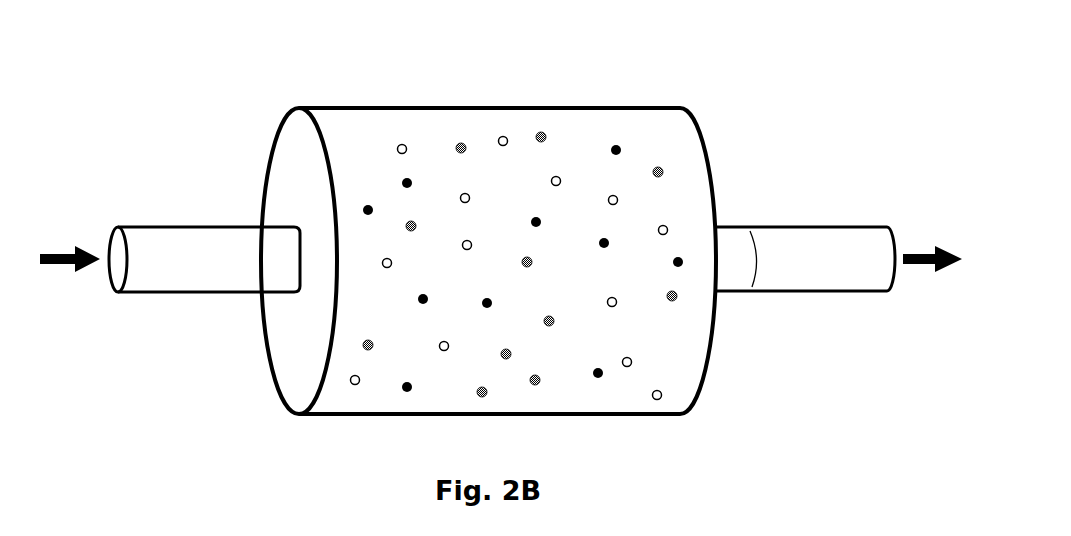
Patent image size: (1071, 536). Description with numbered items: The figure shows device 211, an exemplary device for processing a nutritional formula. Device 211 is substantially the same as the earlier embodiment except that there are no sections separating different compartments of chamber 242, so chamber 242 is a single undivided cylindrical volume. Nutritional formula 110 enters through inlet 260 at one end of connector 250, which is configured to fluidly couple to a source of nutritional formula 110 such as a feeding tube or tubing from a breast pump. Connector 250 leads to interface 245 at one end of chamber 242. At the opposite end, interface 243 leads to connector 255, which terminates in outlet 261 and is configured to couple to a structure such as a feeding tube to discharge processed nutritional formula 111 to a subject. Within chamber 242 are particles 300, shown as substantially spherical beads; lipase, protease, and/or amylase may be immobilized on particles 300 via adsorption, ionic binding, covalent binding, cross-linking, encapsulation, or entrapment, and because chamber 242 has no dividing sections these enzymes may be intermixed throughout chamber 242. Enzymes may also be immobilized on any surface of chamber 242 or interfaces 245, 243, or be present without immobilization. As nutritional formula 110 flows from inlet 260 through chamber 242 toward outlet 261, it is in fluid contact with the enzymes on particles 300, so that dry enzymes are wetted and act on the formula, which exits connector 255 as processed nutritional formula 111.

The device 211 is at (362, 77).
The chamber 242 is at (430, 418).
The particles 300 is at (615, 150).
The interface 245 is at (277, 247).
The interface 243 is at (733, 280).
The connector 250 is at (237, 282).
The inlet 260 is at (108, 273).
The connector 255 is at (807, 247).
The outlet 261 is at (887, 287).
The nutritional formula 110 is at (68, 254).
The processed nutritional formula 111 is at (912, 254).